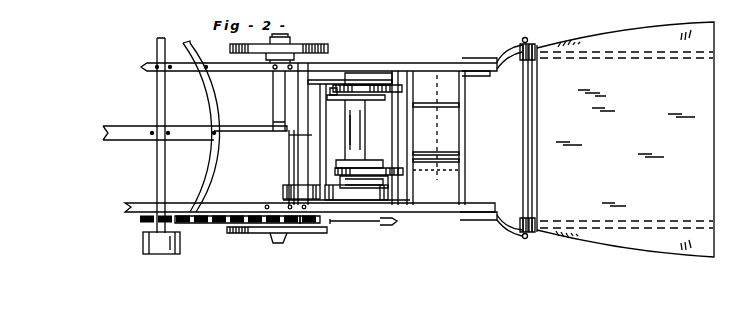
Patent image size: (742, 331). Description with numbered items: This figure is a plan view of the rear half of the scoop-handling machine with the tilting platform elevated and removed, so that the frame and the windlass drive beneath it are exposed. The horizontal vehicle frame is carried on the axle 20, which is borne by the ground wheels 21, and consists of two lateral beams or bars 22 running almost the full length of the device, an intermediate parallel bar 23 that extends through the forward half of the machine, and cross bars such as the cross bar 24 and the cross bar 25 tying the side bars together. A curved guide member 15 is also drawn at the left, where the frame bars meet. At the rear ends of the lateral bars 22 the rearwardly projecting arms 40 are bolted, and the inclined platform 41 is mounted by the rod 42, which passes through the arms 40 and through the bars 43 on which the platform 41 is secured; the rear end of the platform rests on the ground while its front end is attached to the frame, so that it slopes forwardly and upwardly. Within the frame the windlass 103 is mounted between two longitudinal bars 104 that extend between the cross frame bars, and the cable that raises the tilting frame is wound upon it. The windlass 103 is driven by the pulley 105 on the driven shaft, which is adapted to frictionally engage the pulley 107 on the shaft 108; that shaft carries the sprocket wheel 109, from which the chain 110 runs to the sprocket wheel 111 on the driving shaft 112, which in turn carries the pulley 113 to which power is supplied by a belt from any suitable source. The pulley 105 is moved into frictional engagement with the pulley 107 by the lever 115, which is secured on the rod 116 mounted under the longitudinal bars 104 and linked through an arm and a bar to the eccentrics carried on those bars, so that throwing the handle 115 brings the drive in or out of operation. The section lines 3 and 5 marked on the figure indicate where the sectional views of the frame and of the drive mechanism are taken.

The section line 3— 3 is at (475, 88).
The section line 5— 5 is at (292, 160).
The arcuate guide track 15 is at (210, 105).
The axle 20 is at (273, 110).
The ground wheels 21 is at (328, 48).
The lateral beams or bars 22 is at (418, 65).
The intermediate parallel bar 23 is at (234, 140).
The cross bar 24 is at (466, 115).
The cross bar 25 is at (402, 129).
The rearwardly projecting arms 40 is at (497, 58).
The inclined platform 41 is at (625, 139).
The rod 42 is at (525, 151).
The bars 43 is at (535, 46).
The windlass 103 is at (345, 128).
The longitudinal bars 104 is at (335, 90).
The pulley 105 is at (362, 200).
The pulley 107 is at (283, 190).
The shaft 108 is at (312, 137).
The sprocket wheel 109 is at (322, 213).
The chain 110 is at (213, 224).
The sprocket wheel 111 is at (150, 222).
The driving shaft 112 is at (158, 177).
The pulley 113 is at (143, 245).
The lever 115 is at (352, 222).
The rod 116 is at (400, 197).